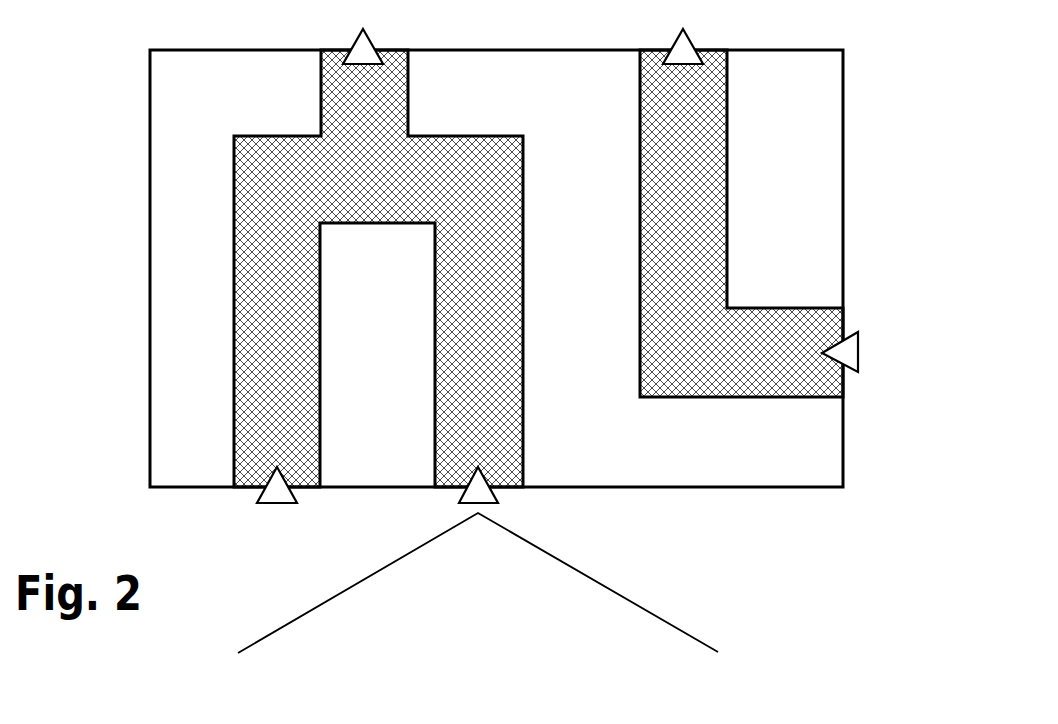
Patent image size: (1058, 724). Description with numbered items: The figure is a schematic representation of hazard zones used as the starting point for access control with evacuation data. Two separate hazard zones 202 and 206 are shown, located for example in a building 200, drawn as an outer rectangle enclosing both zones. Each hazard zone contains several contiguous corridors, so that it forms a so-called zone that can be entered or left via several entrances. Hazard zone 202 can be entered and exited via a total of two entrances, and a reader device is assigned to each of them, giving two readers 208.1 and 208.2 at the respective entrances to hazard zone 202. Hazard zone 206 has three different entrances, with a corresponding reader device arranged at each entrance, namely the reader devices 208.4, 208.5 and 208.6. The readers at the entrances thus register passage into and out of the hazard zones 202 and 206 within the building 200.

The building 200 is at (843, 108).
The hazard zone 202 is at (710, 238).
The hazard zone 206 is at (505, 183).
The reader device 208.1 is at (851, 372).
The reader device 208.2 is at (693, 43).
The reader device 208.4 is at (500, 498).
The reader device 208.5 is at (257, 497).
The reader device 208.6 is at (373, 43).